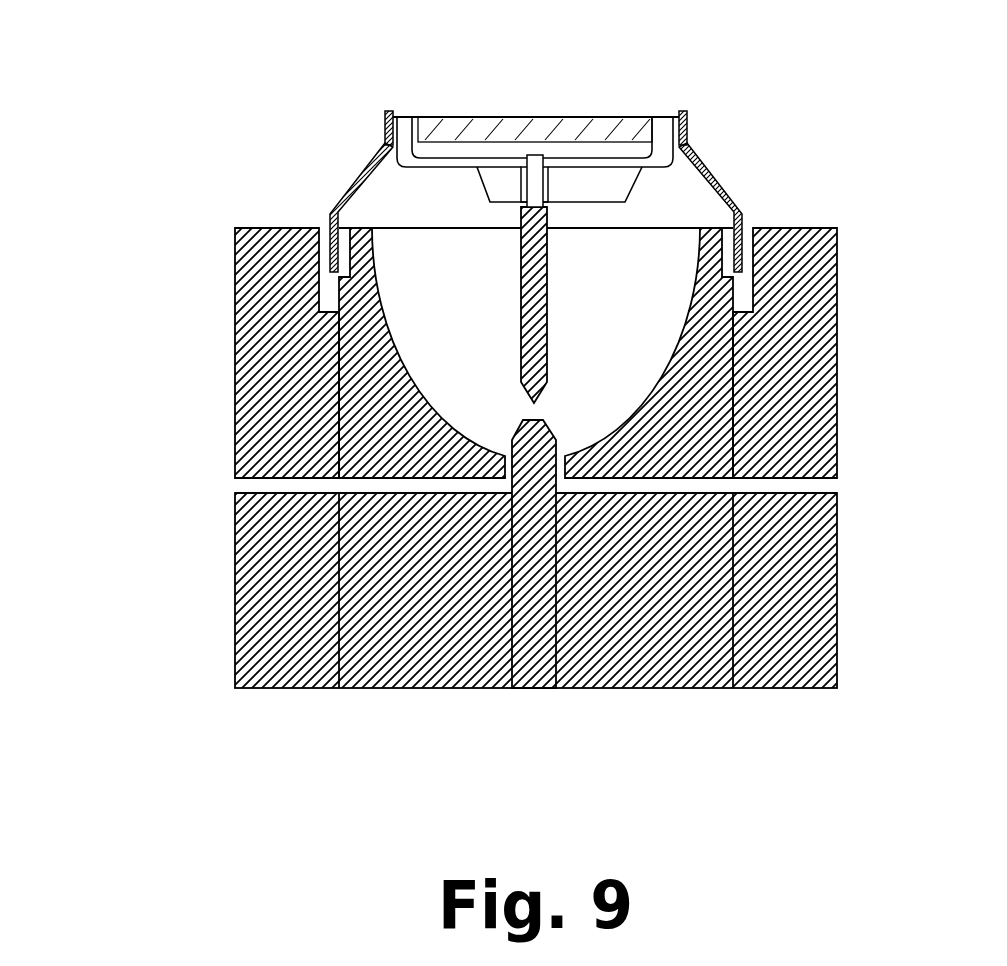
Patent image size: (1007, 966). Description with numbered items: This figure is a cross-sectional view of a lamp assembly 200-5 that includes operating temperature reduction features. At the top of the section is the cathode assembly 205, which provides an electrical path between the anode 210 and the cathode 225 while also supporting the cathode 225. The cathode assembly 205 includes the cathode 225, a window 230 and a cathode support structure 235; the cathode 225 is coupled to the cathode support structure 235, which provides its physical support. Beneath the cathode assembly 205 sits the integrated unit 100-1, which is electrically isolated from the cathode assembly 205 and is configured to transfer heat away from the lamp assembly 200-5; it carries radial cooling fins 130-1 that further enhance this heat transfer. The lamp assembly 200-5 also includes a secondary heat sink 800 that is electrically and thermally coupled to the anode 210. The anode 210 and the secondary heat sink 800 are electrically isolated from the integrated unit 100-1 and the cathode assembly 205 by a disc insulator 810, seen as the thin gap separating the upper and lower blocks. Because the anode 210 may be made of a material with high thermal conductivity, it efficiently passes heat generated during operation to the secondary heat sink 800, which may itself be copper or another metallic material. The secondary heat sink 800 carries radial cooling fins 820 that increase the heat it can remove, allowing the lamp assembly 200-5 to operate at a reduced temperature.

The lamp assembly 200-5 is at (209, 64).
The cathode assembly 205 is at (327, 128).
The cathode support structure 235 is at (490, 200).
The window 230 is at (532, 127).
The cathode 225 is at (548, 286).
The radial cooling fins 130-1 is at (235, 308).
The integrated unit 100-1 is at (328, 369).
The disc insulator 810 is at (733, 478).
The radial cooling fins 820 is at (235, 594).
The anode 210 is at (535, 690).
The secondary heat sink 800 is at (477, 595).